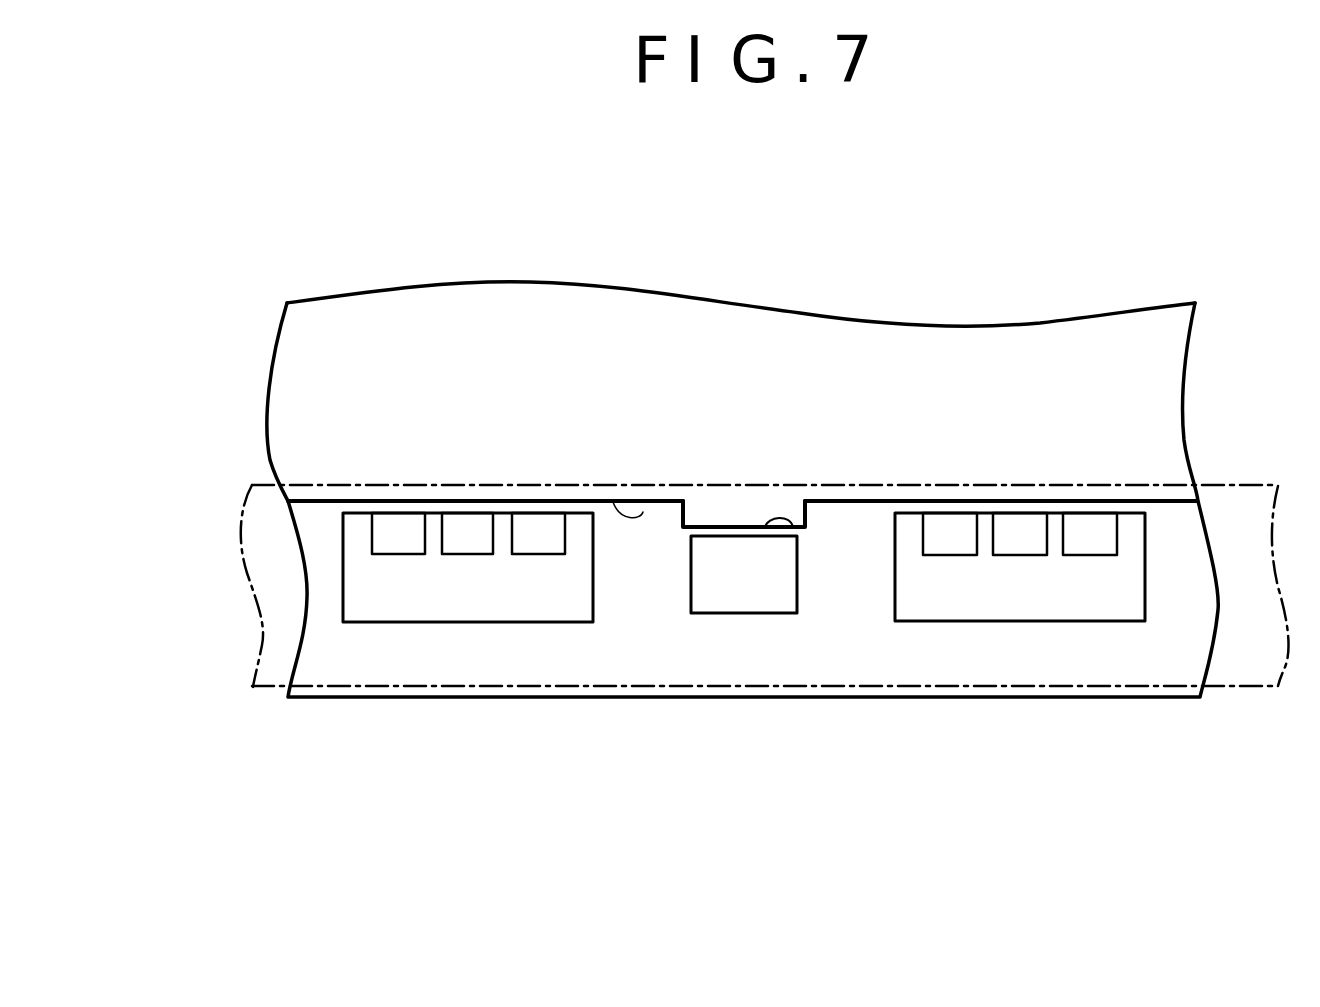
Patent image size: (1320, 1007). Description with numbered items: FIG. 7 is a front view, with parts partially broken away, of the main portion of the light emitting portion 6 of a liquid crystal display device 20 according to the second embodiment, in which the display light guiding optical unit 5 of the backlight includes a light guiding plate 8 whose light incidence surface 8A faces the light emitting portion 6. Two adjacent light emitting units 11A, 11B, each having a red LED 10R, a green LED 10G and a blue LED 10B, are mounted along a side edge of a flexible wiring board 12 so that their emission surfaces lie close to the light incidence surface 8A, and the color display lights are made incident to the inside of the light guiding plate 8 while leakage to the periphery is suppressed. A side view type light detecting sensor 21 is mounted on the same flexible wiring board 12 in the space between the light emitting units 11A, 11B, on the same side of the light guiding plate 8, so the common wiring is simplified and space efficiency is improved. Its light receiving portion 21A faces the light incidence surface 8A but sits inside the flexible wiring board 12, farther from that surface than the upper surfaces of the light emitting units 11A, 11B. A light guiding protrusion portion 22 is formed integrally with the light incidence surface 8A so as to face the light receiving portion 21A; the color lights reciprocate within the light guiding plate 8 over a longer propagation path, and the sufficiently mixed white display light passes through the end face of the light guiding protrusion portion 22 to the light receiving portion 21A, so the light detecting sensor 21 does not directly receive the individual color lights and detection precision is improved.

The display light guiding optical unit 5 is at (208, 369).
The light emitting portion 6 is at (224, 626).
The light guiding plate 8 is at (489, 310).
The light incidence surface 8A is at (643, 512).
The liquid crystal display device 20 is at (808, 238).
The light guiding protrusion portion 22 is at (697, 513).
The light detecting sensor 21 is at (743, 573).
The light receiving portion 21A is at (792, 533).
The light emitting unit 11A is at (342, 753).
The light emitting unit 11B is at (895, 753).
The red LED 10R is at (397, 542).
The green LED 10G is at (468, 542).
The blue LED 10B is at (540, 542).
The flexible wiring board 12 is at (1238, 512).